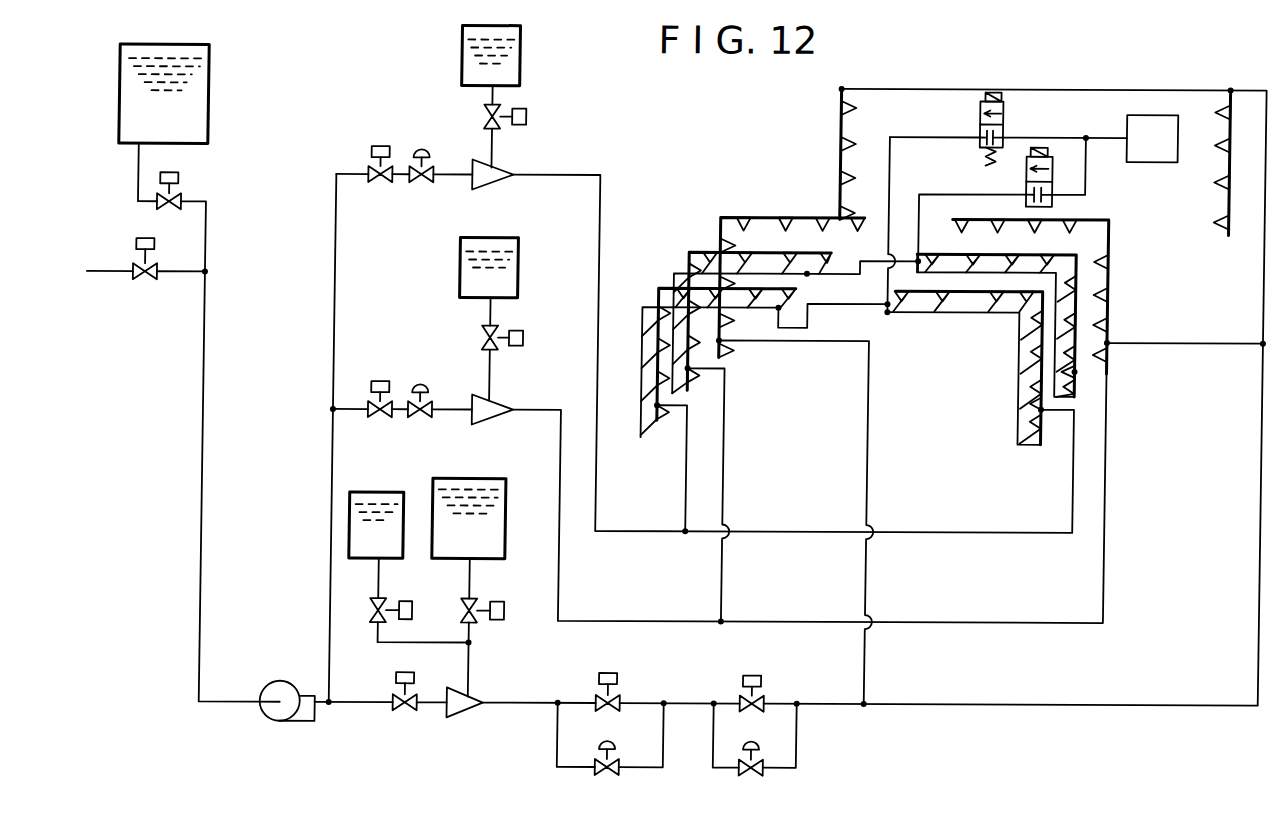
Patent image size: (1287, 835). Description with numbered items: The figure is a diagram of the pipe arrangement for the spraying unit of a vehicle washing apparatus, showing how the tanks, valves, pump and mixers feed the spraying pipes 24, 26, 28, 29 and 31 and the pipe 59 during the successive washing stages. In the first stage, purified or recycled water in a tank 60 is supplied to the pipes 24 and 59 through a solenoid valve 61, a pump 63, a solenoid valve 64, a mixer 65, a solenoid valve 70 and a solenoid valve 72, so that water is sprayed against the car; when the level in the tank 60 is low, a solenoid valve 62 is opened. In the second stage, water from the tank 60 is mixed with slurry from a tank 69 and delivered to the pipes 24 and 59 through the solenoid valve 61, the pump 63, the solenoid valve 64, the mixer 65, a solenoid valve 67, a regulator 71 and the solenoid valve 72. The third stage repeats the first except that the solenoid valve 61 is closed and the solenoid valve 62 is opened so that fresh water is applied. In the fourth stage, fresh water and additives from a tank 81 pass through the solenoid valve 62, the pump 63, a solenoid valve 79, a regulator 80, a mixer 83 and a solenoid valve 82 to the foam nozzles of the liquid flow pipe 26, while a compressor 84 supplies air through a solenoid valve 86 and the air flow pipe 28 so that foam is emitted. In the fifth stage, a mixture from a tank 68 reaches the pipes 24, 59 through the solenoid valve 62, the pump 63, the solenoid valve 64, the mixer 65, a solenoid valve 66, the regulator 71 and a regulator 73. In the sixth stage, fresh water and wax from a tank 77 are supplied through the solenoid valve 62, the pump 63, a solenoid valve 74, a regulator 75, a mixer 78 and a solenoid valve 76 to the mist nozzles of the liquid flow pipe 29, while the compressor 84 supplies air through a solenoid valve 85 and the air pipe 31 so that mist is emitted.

The pipe 24 is at (1112, 277).
The liquid flow pipe 26 is at (1079, 371).
The air flow pipe 28 is at (936, 276).
The liquid flow pipe 29 is at (1036, 401).
The air pipe 31 is at (961, 301).
The pipe 59 is at (1224, 121).
The tank 60 is at (208, 52).
The solenoid valve 61 is at (180, 177).
The solenoid valve 62 is at (153, 283).
The pump 63 is at (283, 721).
The solenoid valve 64 is at (408, 712).
The mixer 65 is at (474, 718).
The solenoid valve 66 is at (482, 622).
The solenoid valve 67 is at (381, 622).
The tank 68 is at (484, 480).
The tank 69 is at (386, 494).
The solenoid valve 70 is at (624, 676).
The regulator 71 is at (604, 750).
The solenoid valve 72 is at (768, 677).
The regulator 73 is at (770, 746).
The solenoid valve 74 is at (378, 147).
The regulator 75 is at (421, 150).
The solenoid valve 76 is at (527, 117).
The tank 77 is at (520, 43).
The mixer 78 is at (470, 188).
The solenoid valve 79 is at (382, 382).
The regulator 80 is at (423, 385).
The tank 81 is at (506, 238).
The solenoid valve 82 is at (526, 336).
The mixer 83 is at (514, 404).
The compressor 84 is at (1162, 161).
The solenoid valve 85 is at (1002, 127).
The solenoid valve 86 is at (1053, 166).